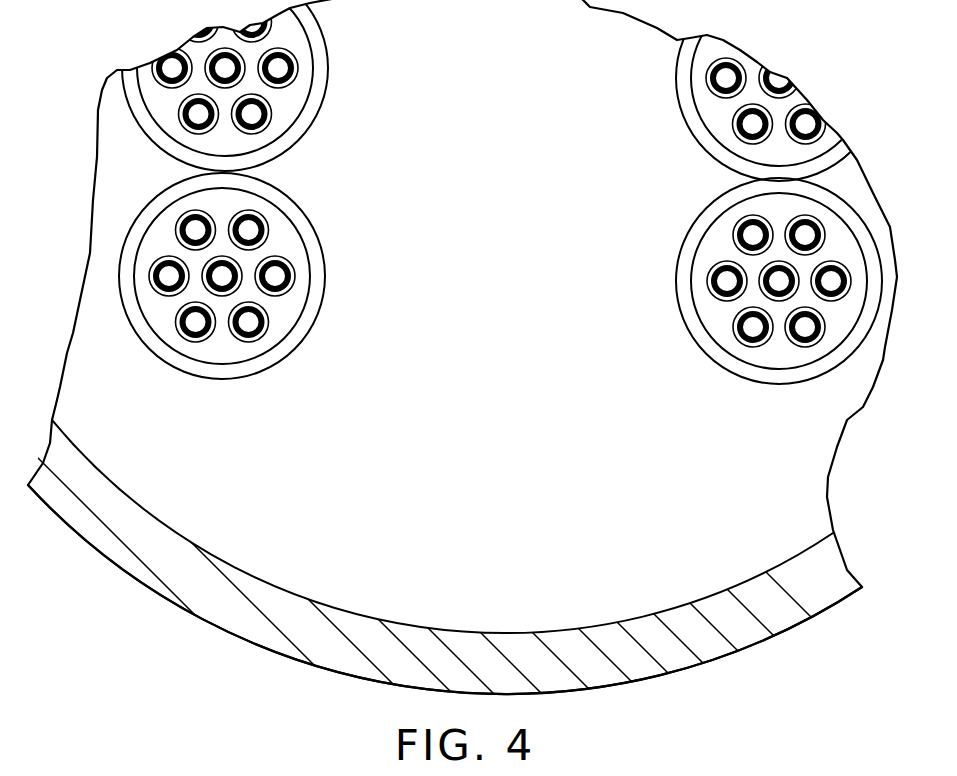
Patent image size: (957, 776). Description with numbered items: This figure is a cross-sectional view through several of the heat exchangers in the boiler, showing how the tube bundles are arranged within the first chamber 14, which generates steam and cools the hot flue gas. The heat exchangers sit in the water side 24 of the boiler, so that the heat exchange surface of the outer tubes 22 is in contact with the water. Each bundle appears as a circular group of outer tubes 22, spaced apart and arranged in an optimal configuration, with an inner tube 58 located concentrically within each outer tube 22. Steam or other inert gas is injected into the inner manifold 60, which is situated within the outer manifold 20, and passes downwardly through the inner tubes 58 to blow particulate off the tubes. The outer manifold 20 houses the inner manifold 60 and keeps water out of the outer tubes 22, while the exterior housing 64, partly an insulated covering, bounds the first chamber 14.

The first chamber 14 is at (757, 645).
The outer manifold 20 is at (288, 154).
The outer tubes 22 is at (292, 78).
The water side 24 is at (511, 525).
The inner tubes 58 is at (297, 67).
The inner manifold 60 is at (300, 128).
The exterior housing 64 is at (418, 637).